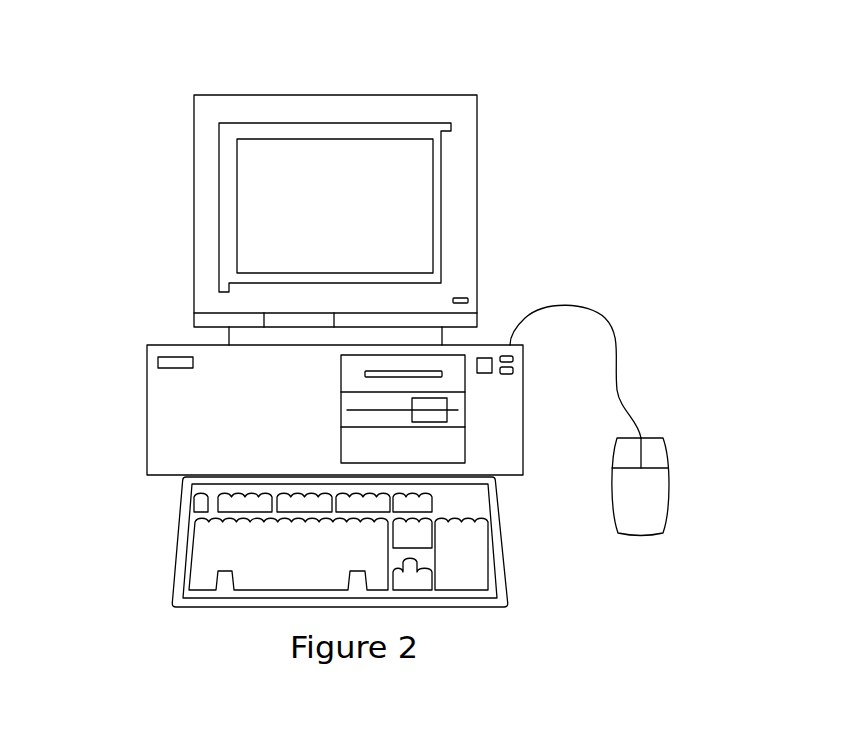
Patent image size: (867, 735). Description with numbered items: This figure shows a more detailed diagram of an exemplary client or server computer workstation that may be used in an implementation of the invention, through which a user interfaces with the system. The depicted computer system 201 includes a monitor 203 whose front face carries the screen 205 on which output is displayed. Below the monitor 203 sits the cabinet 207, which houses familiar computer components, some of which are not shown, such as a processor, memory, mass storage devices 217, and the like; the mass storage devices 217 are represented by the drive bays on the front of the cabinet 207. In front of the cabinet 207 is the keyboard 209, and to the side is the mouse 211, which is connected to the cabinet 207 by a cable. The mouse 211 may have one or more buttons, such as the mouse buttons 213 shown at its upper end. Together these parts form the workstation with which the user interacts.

The computer system 201 is at (500, 71).
The monitor 203 is at (477, 182).
The screen 205 is at (255, 197).
The cabinet 207 is at (173, 347).
The keyboard 209 is at (220, 608).
The mouse 211 is at (642, 523).
The mouse buttons 213 is at (632, 458).
The mass storage devices 217 is at (455, 360).